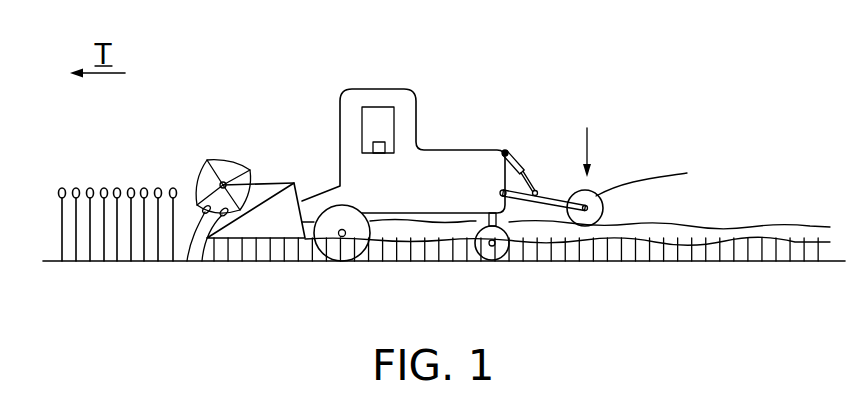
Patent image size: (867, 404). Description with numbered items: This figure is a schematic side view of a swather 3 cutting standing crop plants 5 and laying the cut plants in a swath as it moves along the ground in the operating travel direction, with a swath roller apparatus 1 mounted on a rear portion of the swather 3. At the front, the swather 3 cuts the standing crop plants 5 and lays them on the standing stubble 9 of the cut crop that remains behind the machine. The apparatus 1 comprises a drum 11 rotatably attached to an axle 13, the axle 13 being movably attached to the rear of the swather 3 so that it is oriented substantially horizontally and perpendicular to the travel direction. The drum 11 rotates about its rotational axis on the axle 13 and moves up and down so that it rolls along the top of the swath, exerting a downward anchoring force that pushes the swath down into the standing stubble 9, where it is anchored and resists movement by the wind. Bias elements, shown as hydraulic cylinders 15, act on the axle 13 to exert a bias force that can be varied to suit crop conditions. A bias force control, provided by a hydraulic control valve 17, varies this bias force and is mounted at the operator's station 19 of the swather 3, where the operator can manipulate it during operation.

The swath roller apparatus 1 is at (621, 140).
The swather 3 is at (417, 111).
The standing crop plants 5 is at (90, 187).
The standing stubble 9 is at (432, 247).
The drum 11 is at (596, 188).
The axle 13 is at (603, 214).
The hydraulic cylinders 15 is at (520, 158).
The hydraulic control valve 17 is at (377, 141).
The operator's station 19 is at (380, 115).